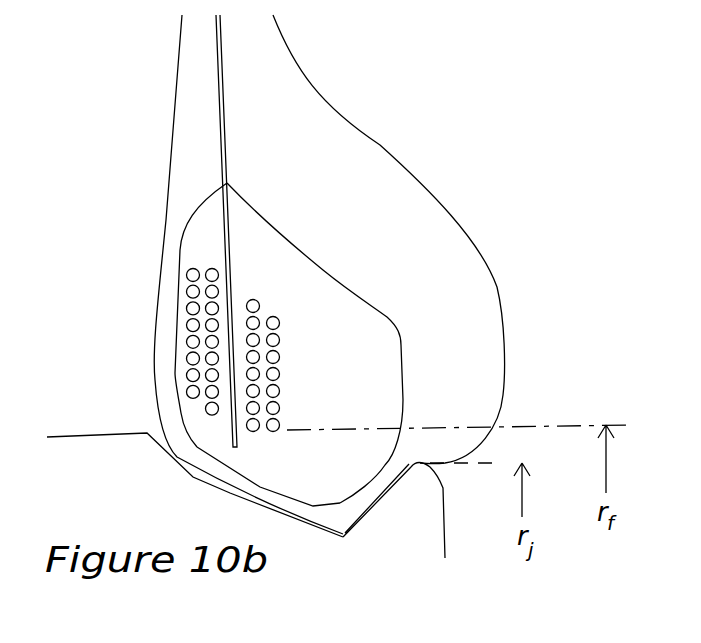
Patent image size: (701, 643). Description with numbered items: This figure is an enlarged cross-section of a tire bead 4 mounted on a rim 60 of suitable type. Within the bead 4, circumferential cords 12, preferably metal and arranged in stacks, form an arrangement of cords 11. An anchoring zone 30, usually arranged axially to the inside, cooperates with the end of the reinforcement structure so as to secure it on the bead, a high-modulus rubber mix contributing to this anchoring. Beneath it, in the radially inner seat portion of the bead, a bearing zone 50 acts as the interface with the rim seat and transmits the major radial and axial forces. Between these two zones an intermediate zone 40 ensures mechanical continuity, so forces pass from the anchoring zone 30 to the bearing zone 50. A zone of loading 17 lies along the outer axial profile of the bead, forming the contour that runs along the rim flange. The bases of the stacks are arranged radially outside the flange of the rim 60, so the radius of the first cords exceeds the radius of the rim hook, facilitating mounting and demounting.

The second bead 4 is at (310, 363).
The arrangement of cords 11 is at (175, 323).
The circumferential cords 12 is at (273, 337).
The zone of loading 17 is at (385, 483).
The anchoring zone 30 is at (228, 367).
The intermediate zone 40 is at (313, 400).
The bearing zone 50 is at (277, 489).
The rim 60 is at (422, 488).